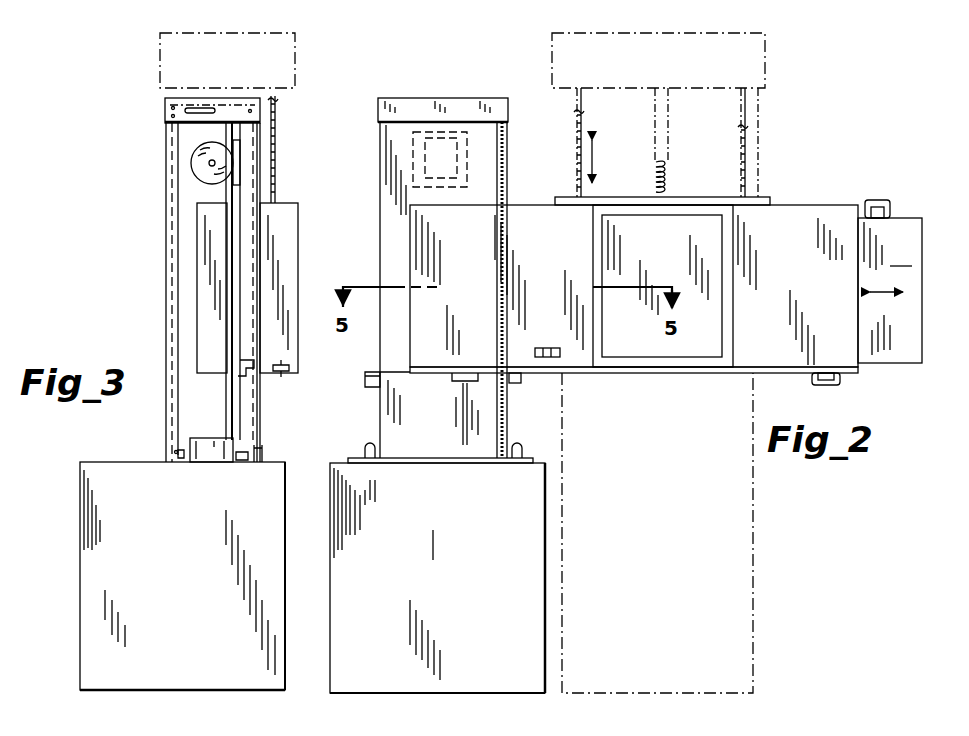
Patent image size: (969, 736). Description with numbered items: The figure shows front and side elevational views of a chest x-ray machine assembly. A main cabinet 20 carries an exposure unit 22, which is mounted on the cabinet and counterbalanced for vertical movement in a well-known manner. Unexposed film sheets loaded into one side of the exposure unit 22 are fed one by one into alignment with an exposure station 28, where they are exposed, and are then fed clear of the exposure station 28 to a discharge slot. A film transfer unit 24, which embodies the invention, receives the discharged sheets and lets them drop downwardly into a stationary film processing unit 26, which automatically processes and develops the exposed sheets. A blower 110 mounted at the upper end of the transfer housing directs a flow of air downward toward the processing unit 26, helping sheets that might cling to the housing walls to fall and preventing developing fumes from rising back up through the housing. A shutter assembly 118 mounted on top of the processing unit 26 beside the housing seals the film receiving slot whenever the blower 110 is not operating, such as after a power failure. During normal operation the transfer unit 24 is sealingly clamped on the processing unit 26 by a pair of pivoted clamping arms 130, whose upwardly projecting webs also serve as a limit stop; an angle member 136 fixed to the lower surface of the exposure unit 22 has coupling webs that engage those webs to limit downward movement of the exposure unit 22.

In FIG. 3, the main cabinet 20 is at (296, 72).
In FIG. 2, the main cabinet 20 is at (758, 564).
In FIG. 3, the exposure unit 22 is at (297, 218).
In FIG. 2, the exposure unit 22 is at (802, 220).
In FIG. 3, the film transfer unit 24 is at (164, 242).
In FIG. 2, the film transfer unit 24 is at (440, 280).
In FIG. 3, the film processing unit 26 is at (142, 460).
In FIG. 2, the film processing unit 26 is at (478, 519).
In FIG. 2, the exposure station 28 is at (686, 254).
In FIG. 3, the blower 110 is at (192, 158).
In FIG. 2, the blower 110 is at (467, 152).
In FIG. 3, the shutter assembly 118 is at (214, 437).
In FIG. 3, the clamping arms 130 is at (264, 450).
In FIG. 2, the clamping arms 130 is at (517, 446).
In FIG. 2, the angle member 136 is at (365, 378).